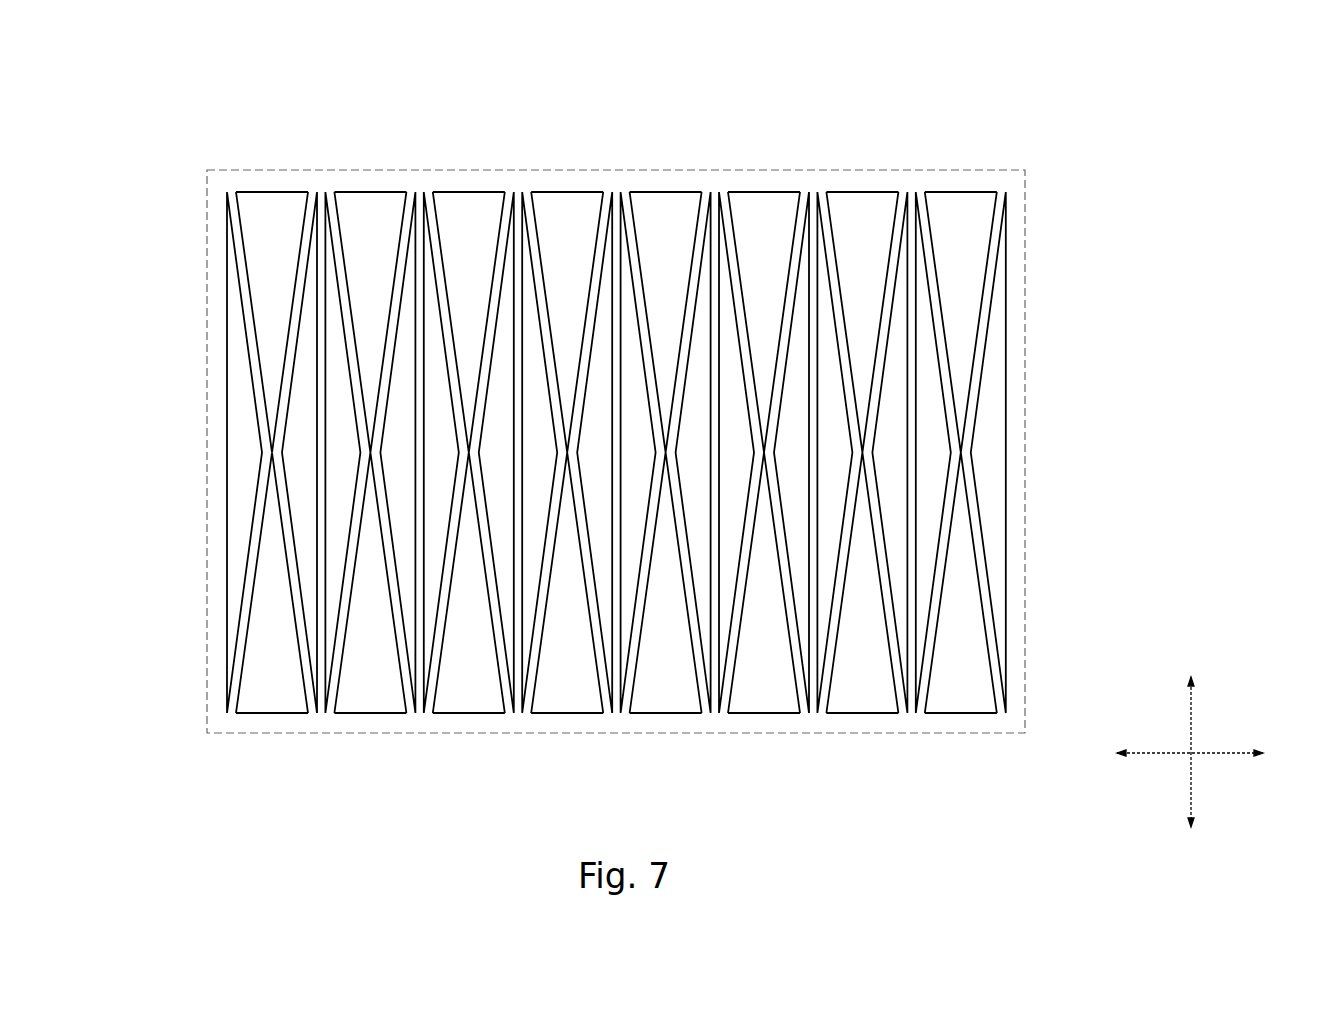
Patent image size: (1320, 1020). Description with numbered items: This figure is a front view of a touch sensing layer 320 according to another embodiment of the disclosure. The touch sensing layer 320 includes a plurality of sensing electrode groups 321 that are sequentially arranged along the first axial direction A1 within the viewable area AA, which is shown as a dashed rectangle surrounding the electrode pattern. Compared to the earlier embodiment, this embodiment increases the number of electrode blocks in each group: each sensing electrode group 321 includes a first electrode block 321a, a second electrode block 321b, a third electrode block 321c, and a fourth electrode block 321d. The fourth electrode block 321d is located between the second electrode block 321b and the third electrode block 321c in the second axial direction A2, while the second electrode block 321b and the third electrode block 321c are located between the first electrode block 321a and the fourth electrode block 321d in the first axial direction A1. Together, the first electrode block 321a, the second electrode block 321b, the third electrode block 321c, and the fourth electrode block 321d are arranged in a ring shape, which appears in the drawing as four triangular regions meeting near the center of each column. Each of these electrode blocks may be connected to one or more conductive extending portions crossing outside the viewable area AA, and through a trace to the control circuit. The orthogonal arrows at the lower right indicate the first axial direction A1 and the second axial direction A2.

The touch sensing layer 320 is at (114, 52).
The viewable area AA is at (616, 170).
The sensing electrode group 321 is at (108, 387).
The first electrode block 321a is at (237, 437).
The second electrode block 321b is at (272, 373).
The third electrode block 321c is at (272, 520).
The fourth electrode block 321d is at (298, 478).
The first axial direction A1 is at (1189, 753).
The second axial direction A2 is at (1190, 754).